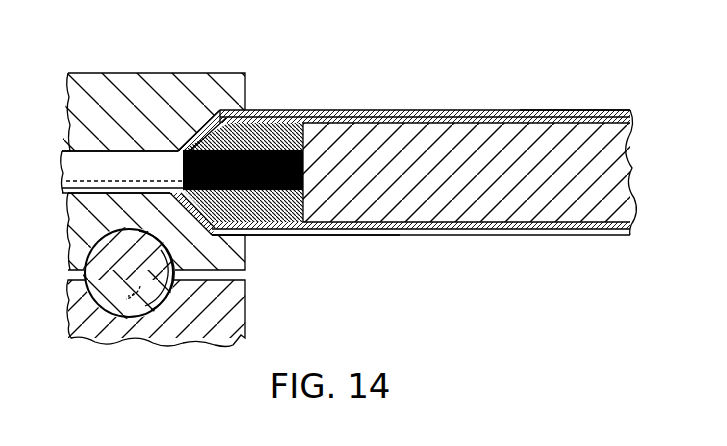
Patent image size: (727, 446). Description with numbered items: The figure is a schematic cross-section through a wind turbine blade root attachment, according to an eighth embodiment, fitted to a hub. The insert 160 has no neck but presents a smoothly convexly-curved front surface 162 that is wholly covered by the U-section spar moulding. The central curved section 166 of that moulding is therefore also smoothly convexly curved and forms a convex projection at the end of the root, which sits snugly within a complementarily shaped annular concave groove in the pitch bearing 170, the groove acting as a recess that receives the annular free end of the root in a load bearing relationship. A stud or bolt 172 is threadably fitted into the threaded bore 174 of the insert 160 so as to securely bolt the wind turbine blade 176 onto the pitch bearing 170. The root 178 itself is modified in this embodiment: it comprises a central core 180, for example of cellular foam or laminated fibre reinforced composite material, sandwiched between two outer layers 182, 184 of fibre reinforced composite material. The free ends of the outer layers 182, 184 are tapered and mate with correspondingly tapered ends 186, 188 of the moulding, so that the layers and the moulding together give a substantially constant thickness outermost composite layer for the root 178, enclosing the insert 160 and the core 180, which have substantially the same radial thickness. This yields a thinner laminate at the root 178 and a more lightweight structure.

The insert 160 is at (270, 120).
The front surface 162 is at (221, 109).
The central curved section 166 is at (150, 80).
The pitch bearing 170 is at (205, 265).
The stud or bolt 172 is at (70, 150).
The threaded bore 174 is at (328, 110).
The wind turbine blade 176 is at (613, 110).
The root 178 is at (547, 213).
The central core 180 is at (508, 127).
The outer layer 182 is at (563, 110).
The outer layer 184 is at (613, 237).
The tapered end 186 is at (432, 110).
The tapered end 188 is at (214, 110).